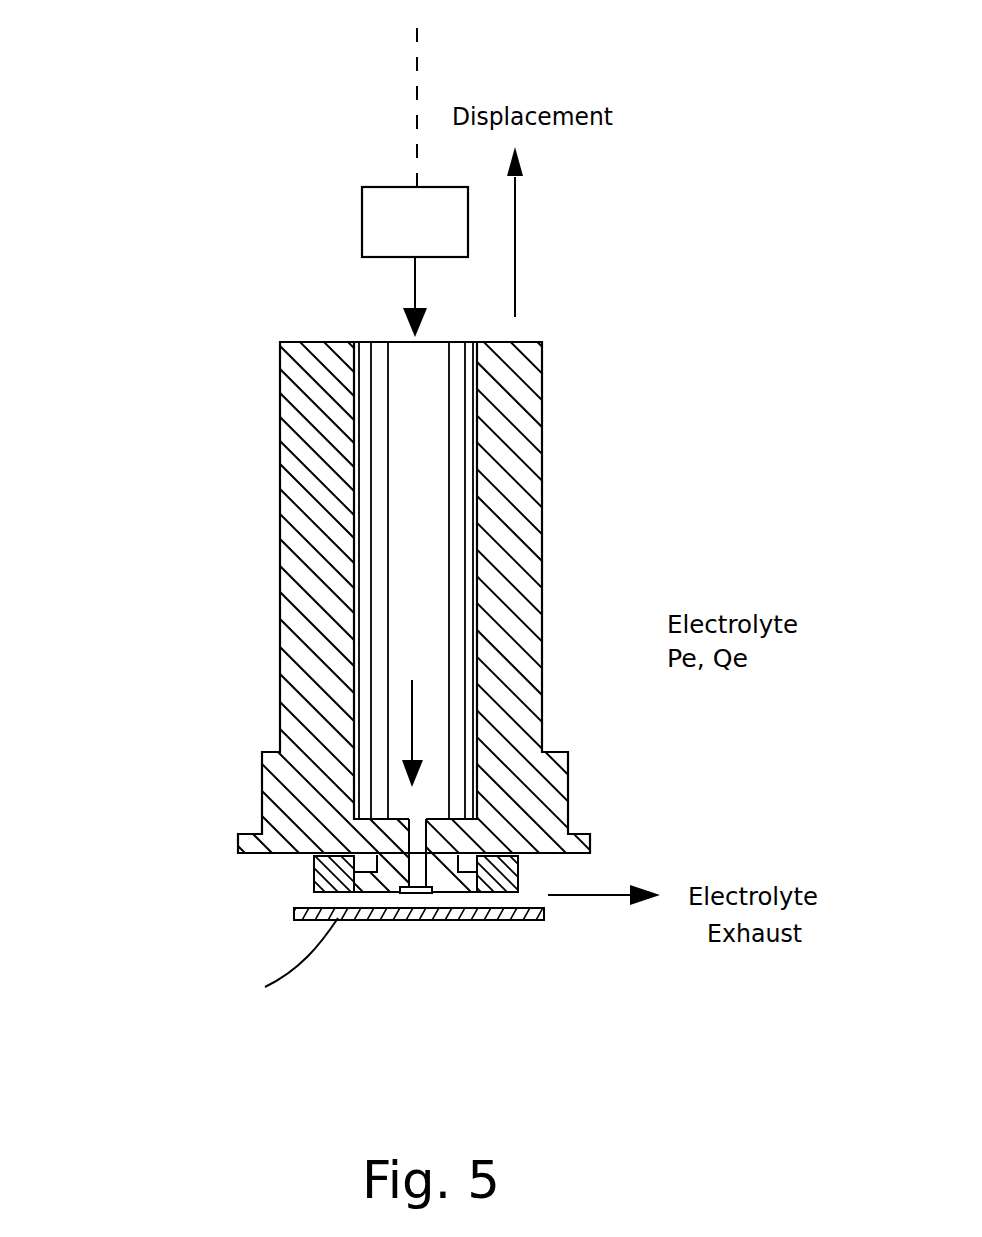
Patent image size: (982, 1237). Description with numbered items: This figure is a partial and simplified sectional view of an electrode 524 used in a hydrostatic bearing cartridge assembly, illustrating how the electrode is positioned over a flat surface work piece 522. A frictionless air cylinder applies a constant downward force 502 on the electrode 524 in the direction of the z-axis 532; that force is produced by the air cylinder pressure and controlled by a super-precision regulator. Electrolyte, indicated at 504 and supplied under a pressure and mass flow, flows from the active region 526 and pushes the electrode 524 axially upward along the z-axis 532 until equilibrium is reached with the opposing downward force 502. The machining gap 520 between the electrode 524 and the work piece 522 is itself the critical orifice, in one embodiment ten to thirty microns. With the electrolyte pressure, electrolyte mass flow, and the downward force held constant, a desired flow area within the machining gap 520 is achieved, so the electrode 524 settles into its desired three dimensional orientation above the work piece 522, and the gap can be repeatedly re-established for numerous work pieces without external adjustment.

The downward force 502 is at (362, 210).
The electrolyte supply 504 is at (412, 680).
The machining gap 520 is at (313, 902).
The work piece 522 is at (442, 918).
The electrode 524 is at (528, 418).
The active region 526 is at (520, 876).
The z-axis 532 is at (417, 14).